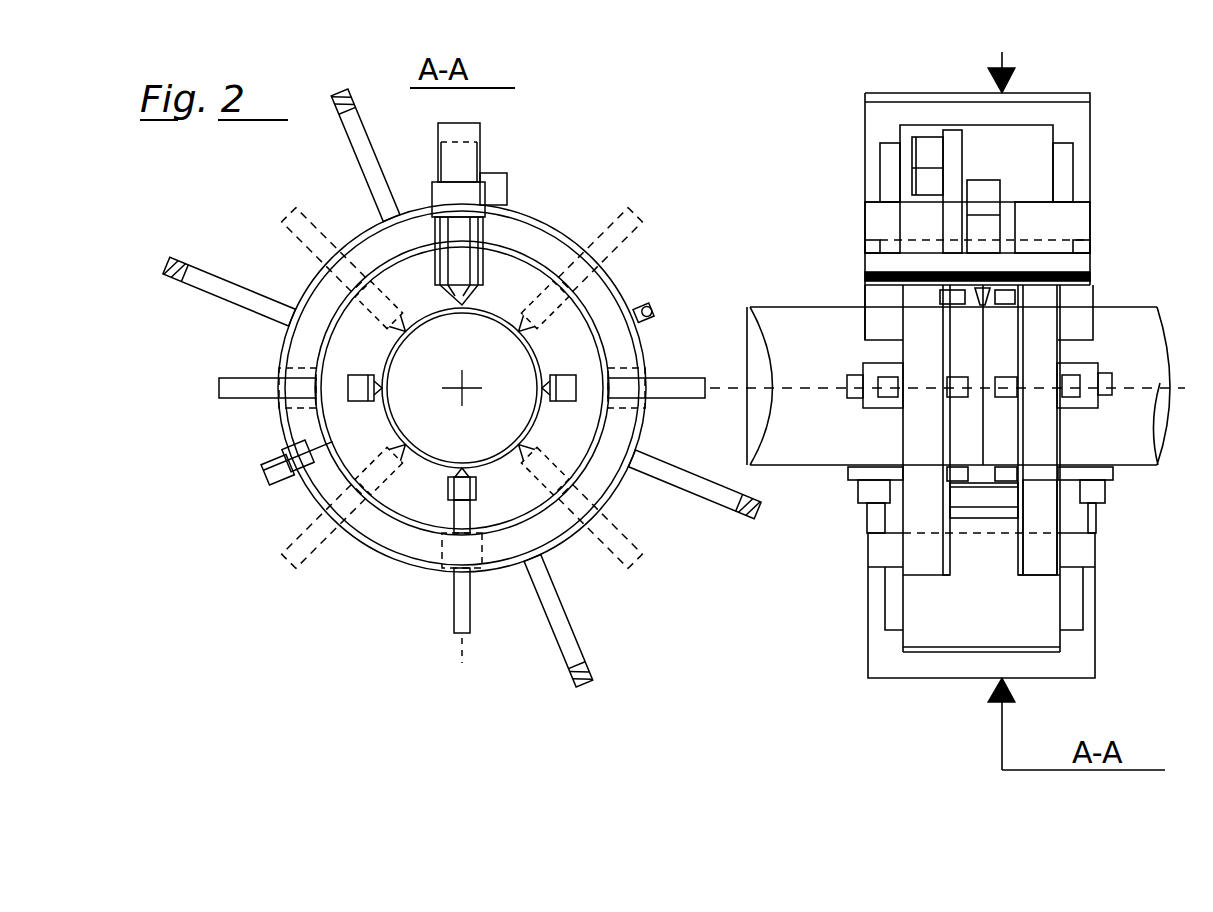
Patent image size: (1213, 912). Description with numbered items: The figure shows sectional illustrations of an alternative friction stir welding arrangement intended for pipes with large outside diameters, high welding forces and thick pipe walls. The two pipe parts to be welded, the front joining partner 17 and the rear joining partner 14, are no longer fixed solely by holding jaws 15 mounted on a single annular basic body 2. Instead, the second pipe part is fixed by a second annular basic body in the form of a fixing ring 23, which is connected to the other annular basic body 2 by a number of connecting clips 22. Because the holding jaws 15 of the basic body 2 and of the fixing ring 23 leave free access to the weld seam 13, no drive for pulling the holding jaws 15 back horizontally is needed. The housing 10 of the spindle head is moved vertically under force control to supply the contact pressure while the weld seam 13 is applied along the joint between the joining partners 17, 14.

The annular basic body 2 is at (923, 553).
The housing of the spindle head 10 is at (978, 243).
The weld seam 13 is at (983, 357).
The rear joining partner 14 is at (1132, 452).
The holding jaw 15 is at (870, 300).
The front joining partner 17 is at (815, 452).
The connecting clip 22 is at (692, 493).
The fixing ring 23 is at (1043, 518).